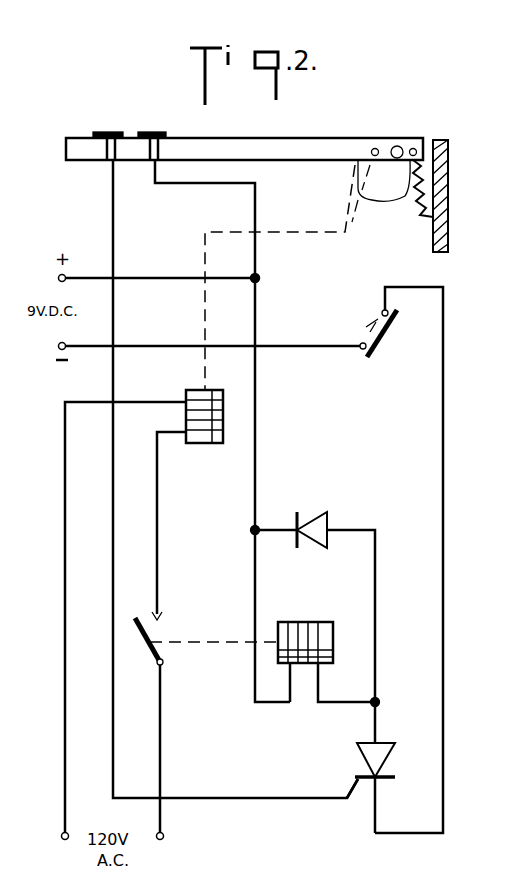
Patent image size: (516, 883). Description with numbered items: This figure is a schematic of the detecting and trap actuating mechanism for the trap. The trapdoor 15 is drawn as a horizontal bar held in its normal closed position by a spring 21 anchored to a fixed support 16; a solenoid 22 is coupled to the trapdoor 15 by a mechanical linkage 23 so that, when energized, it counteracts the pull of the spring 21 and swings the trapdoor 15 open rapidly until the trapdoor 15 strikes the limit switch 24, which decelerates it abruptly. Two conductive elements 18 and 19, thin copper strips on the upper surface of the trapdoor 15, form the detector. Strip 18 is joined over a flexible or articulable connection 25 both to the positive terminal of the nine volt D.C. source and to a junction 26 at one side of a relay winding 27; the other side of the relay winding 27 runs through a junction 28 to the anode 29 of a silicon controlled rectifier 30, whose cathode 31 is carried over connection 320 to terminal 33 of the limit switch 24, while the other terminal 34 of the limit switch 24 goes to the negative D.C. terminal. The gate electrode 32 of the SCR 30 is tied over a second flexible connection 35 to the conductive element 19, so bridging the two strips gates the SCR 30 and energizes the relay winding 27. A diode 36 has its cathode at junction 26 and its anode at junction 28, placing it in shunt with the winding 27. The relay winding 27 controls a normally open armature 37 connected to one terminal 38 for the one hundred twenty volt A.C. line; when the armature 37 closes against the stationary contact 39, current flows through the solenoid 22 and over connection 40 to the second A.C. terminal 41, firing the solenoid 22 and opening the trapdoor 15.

The trapdoor 15 is at (296, 140).
The wall mounting 16 is at (397, 146).
The conductive element 18 is at (170, 119).
The conductive element 19 is at (115, 133).
The spring 21 is at (425, 210).
The solenoid 22 is at (222, 432).
The mechanical linkage 23 is at (310, 232).
The limit switch 24 is at (385, 343).
The flexible or articulable connection 25 is at (232, 190).
The junction 26 is at (250, 531).
The relay winding 27 is at (311, 622).
The junction 28 is at (380, 700).
The anode 29 is at (388, 750).
The silicon controlled rectifier 30 is at (360, 750).
The cathode 31 is at (390, 779).
The gate electrode 32 is at (352, 806).
The terminal 33 is at (382, 311).
The terminal 34 is at (360, 344).
The flexible or articulable connection 35 is at (113, 233).
The diode 36 is at (325, 519).
The armature 37 is at (150, 652).
The terminal 38 is at (165, 836).
The stationary contact 39 is at (170, 607).
The connection 40 is at (66, 532).
The terminal 41 is at (61, 833).
The connection 320 is at (443, 453).